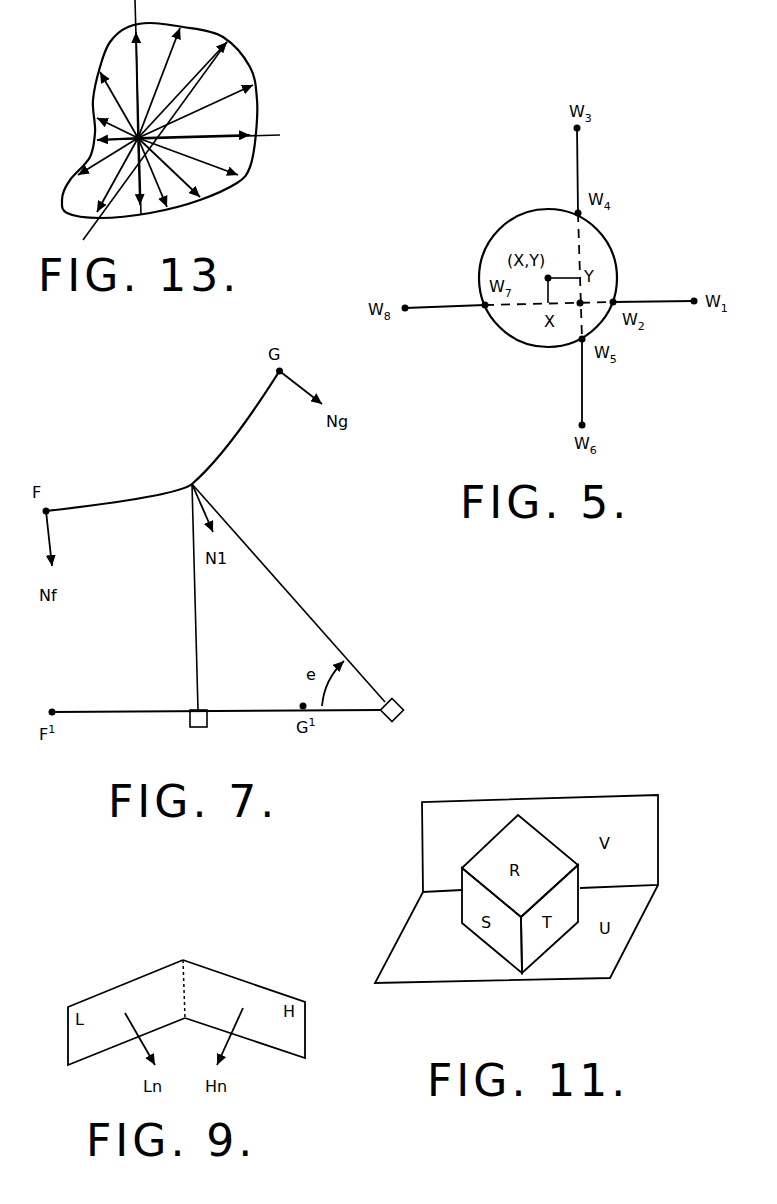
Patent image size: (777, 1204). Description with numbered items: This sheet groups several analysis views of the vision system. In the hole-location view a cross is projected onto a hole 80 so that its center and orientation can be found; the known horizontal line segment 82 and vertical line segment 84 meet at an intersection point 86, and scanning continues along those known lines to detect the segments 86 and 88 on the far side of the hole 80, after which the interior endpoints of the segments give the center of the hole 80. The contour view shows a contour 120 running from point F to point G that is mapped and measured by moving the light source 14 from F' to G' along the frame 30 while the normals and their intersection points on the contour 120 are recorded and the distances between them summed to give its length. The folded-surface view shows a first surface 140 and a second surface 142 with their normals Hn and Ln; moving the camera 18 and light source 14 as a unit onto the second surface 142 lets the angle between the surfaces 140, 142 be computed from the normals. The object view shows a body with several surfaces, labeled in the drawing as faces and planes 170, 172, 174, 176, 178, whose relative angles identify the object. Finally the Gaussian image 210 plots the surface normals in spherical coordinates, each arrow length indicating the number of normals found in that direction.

In FIG. 13, the normal distribution boundary of sampled object 210 is at (255, 70).
In FIG. 5, the hole 80 is at (610, 240).
In FIG. 5, the line segment 84 is at (577, 162).
In FIG. 5, the line segment 82 is at (658, 304).
In FIG. 5, the line segment 88 is at (450, 307).
In FIG. 5, the intersection point / line segment 86 is at (580, 303).
In FIG. 7, the contour 120 is at (260, 402).
In FIG. 7, the frame 30 is at (102, 710).
In FIG. 7, the light source 14 is at (190, 724).
In FIG. 7, the camera 18 is at (405, 718).
In FIG. 11, the back vertical plane 178 is at (660, 843).
In FIG. 11, the horizontal floor plane 176 is at (633, 933).
In FIG. 11, the cube top face 170 is at (543, 832).
In FIG. 11, the cube left face 172 is at (492, 948).
In FIG. 11, the cube right face 174 is at (552, 943).
In FIG. 9, the second surface 142 is at (118, 985).
In FIG. 9, the first surface 140 is at (253, 982).